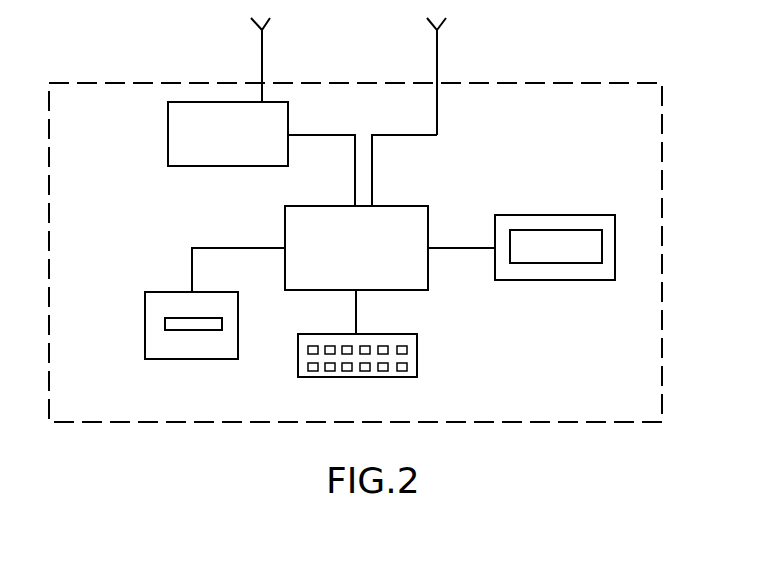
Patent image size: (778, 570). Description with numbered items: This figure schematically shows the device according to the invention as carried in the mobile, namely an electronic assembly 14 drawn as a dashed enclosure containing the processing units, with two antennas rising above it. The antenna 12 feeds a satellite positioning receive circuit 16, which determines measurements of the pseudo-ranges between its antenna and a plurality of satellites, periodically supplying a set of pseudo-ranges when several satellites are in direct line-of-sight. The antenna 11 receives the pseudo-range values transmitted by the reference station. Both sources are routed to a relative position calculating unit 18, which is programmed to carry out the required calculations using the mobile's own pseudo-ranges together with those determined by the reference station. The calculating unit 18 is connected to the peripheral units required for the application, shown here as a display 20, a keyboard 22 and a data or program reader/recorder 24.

The antenna 11 is at (437, 62).
The antenna 12 is at (262, 55).
The electronic assembly 14 is at (544, 72).
The satellite positioning receive circuit 16 is at (288, 114).
The relative position calculating unit 18 is at (393, 206).
The display 20 is at (550, 215).
The keyboard 22 is at (417, 352).
The data or program reader/recorder 24 is at (165, 292).